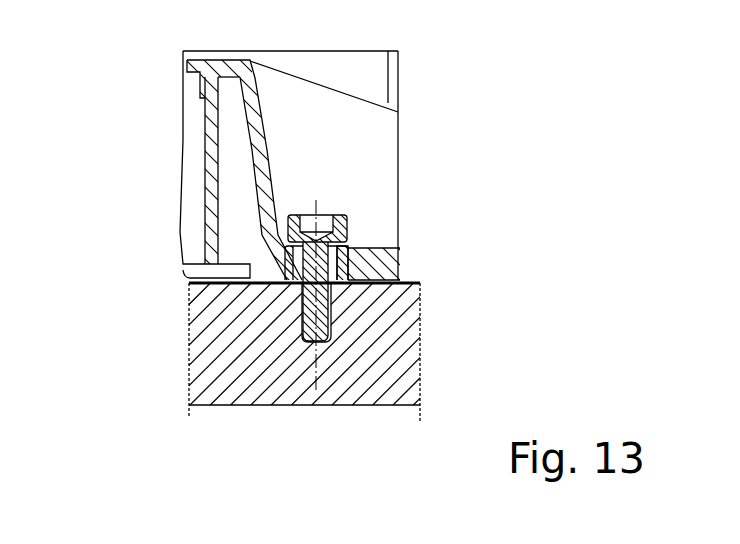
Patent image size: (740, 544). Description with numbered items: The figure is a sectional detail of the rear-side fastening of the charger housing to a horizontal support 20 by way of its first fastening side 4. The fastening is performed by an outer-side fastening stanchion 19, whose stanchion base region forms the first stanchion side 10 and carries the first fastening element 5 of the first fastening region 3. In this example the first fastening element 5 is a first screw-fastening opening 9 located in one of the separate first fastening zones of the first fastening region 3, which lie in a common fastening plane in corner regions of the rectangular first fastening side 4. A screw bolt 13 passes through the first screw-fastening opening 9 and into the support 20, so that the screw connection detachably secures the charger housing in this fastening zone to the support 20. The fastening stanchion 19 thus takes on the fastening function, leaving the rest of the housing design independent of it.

The outer-side fastening stanchion 19 is at (210, 153).
The first fastening side 4 is at (283, 290).
The screw bolt 13 is at (300, 293).
The first fastening element 5 is at (416, 265).
The first screw-fastening opening 9 is at (402, 257).
The first fastening region 3 is at (350, 283).
The horizontal support 20 is at (395, 370).
The first stanchion side 10 is at (345, 287).